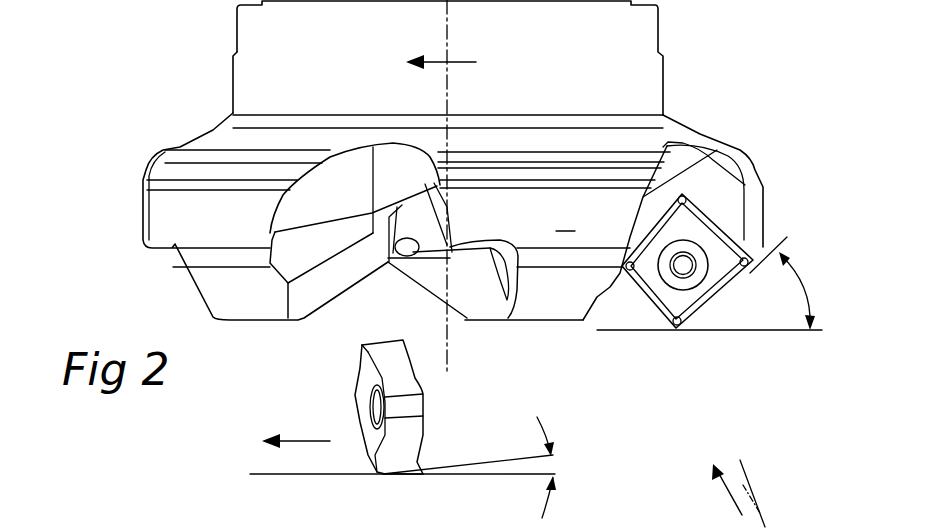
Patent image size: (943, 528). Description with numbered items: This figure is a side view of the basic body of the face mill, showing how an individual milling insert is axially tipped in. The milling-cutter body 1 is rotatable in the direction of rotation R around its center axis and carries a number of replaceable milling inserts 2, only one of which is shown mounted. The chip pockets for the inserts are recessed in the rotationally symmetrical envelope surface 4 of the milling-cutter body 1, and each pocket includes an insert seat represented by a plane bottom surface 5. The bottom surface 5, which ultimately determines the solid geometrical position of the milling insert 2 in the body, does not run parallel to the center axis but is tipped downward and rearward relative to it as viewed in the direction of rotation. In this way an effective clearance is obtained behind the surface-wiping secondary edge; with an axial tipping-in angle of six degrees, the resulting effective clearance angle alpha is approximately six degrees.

The milling-cutter body 1 is at (220, 84).
The milling insert 2 is at (734, 313).
The envelope surface 4 is at (482, 320).
The bottom surface 5 is at (516, 313).